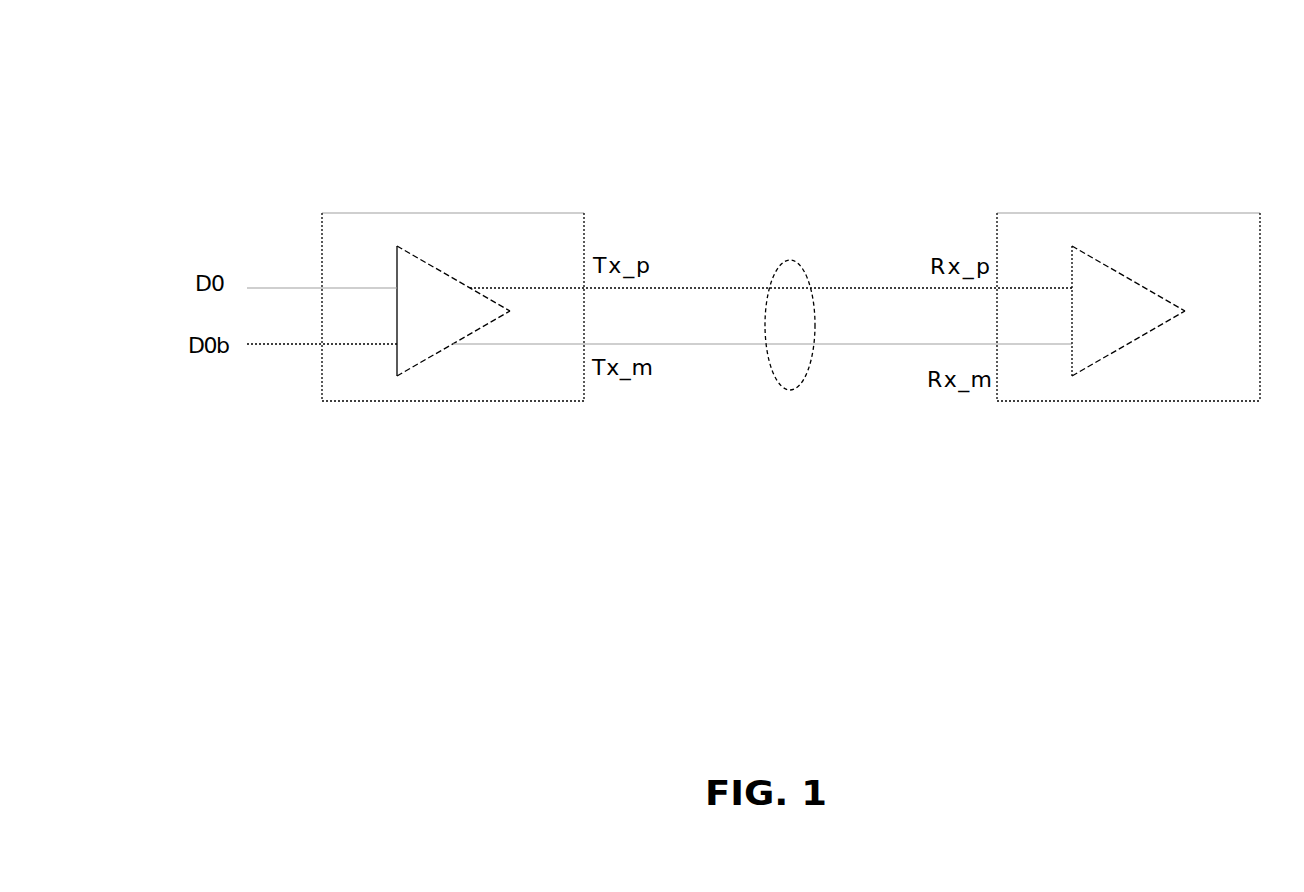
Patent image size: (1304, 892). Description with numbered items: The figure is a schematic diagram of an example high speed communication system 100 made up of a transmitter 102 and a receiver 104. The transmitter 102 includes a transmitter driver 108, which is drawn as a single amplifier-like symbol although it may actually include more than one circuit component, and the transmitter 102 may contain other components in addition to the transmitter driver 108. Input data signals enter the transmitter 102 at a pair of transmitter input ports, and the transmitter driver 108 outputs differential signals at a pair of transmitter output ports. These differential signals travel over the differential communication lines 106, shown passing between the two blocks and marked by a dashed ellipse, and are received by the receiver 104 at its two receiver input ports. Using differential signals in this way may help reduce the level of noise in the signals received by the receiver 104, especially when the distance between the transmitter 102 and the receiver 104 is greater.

The high speed communication system 100 is at (345, 127).
The transmitter 102 is at (453, 213).
The receiver 104 is at (1129, 213).
The differential communication lines 106 is at (790, 260).
The transmitter driver 108 is at (453, 311).